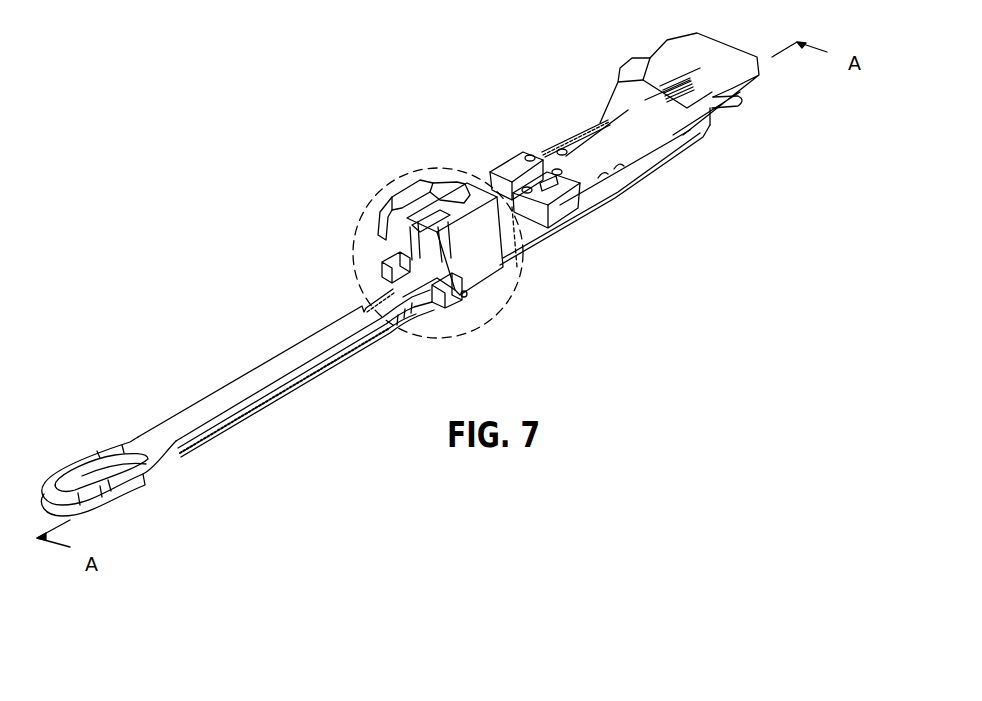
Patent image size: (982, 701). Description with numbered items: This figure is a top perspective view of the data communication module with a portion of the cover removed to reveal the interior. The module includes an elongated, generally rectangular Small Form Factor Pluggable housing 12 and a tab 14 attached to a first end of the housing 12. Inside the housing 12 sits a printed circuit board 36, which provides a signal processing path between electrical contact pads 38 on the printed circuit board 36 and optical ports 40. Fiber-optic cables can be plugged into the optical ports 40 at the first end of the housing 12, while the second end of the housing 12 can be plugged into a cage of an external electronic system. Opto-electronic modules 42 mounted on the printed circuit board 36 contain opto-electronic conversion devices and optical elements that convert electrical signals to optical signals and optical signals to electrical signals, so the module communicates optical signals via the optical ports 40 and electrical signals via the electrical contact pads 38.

The housing 12 is at (627, 190).
The tab 14 is at (228, 426).
The printed circuit board 36 is at (592, 143).
The electrical contact pads 38 is at (733, 107).
The optical ports 40 is at (407, 232).
The opto-electronic modules 42 is at (522, 160).